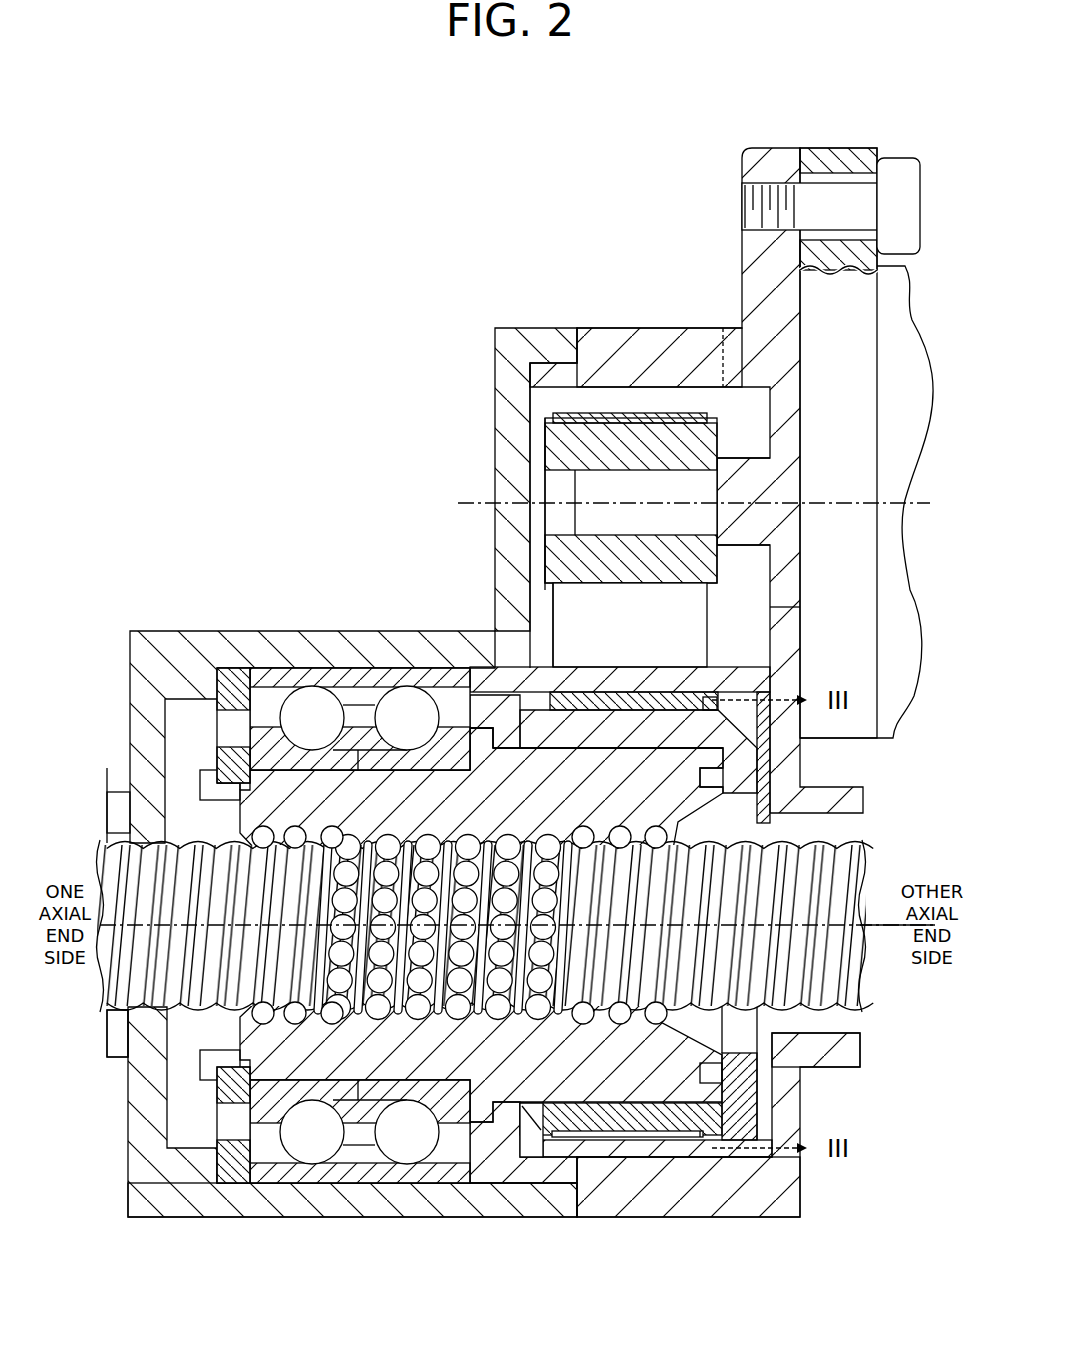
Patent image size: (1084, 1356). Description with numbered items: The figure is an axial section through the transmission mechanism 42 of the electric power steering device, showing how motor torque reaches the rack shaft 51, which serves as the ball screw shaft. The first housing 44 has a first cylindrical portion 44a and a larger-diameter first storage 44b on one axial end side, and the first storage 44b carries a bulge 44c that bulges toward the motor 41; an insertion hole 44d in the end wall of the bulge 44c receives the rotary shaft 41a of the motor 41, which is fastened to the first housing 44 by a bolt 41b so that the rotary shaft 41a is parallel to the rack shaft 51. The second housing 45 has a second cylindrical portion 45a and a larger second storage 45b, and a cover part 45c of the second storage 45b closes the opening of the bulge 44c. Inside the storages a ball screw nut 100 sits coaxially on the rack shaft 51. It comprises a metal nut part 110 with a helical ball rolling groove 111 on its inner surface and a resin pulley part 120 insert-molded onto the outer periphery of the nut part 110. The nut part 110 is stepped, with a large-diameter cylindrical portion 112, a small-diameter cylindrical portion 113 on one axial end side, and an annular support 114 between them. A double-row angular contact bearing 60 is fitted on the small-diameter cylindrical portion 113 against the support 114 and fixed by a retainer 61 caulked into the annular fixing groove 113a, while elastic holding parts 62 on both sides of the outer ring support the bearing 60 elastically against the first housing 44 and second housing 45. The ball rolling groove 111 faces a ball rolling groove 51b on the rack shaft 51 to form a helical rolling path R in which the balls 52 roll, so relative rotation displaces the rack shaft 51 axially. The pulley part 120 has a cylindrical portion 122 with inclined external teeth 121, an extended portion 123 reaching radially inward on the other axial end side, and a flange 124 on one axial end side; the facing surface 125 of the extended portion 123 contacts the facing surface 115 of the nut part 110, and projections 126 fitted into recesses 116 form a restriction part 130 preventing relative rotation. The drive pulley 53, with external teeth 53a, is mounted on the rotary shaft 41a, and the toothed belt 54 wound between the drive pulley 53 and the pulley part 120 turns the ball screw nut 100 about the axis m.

The motor 41 is at (898, 542).
The rotary shaft 41a is at (738, 537).
The bolt 41b is at (895, 168).
The transmission mechanism 42 is at (538, 574).
The first housing 44 is at (739, 728).
The first cylindrical portion 44a is at (862, 1053).
The first storage 44b is at (745, 1212).
The bulge 44c is at (612, 332).
The insertion hole 44d is at (725, 395).
The second housing 45 is at (325, 818).
The second cylindrical portion 45a is at (127, 1063).
The second storage 45b is at (303, 1214).
The cover part 45c is at (500, 386).
The rack shaft 51 is at (471, 932).
The ball rolling groove 51b is at (312, 968).
The balls 52 is at (470, 1016).
The drive pulley 53 is at (576, 435).
The external teeth 53a is at (572, 413).
The toothed belt 54 is at (543, 611).
The bearing 60 is at (367, 1174).
The retainer 61 is at (217, 1092).
The holding part 62 is at (238, 1176).
The ball screw nut 100 is at (576, 887).
The nut part 110 is at (702, 825).
The ball rolling groove 111 is at (498, 840).
The large-diameter cylindrical portion 112 is at (587, 762).
The small-diameter cylindrical portion 113 is at (368, 782).
The fixing groove 113a is at (222, 774).
The support 114 is at (455, 740).
The facing surface 115 is at (763, 760).
The recesses 116 is at (738, 777).
The pulley part 120 is at (651, 704).
The external teeth 121 is at (688, 710).
The cylindrical portion 122 is at (593, 1128).
The extended portion 123 is at (744, 1097).
The flange 124 is at (540, 1152).
The facing surface 125 is at (704, 1136).
The projections 126 is at (660, 1136).
The restriction part 130 is at (724, 1071).
The rolling path R is at (425, 838).
The axis m is at (882, 925).